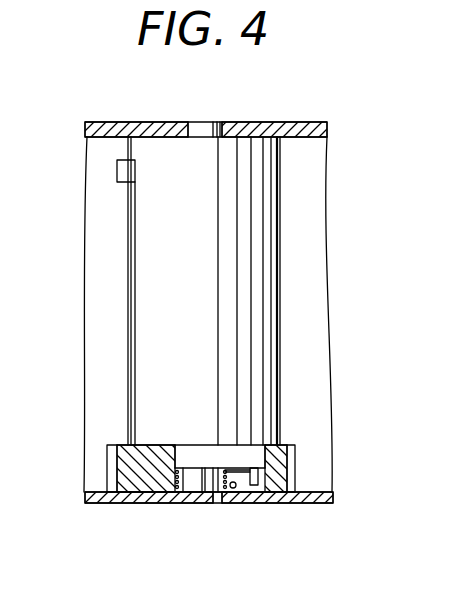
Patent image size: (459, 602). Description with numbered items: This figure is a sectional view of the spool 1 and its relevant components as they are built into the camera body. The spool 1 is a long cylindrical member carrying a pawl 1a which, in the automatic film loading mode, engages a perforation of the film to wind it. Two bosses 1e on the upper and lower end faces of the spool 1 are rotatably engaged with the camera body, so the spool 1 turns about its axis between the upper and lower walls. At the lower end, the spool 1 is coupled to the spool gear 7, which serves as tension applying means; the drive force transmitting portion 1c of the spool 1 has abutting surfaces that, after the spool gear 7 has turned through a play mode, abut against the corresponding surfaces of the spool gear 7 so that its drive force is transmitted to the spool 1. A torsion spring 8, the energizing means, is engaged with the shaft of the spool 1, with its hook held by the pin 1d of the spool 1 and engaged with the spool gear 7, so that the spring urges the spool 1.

The spool 1 is at (268, 372).
The pawl 1a is at (117, 171).
The drive force transmitting portion 1c is at (247, 448).
The pin 1d is at (257, 490).
The bosses 1e is at (205, 122).
The spool gear 7 is at (278, 462).
The torsion spring 8 is at (232, 492).